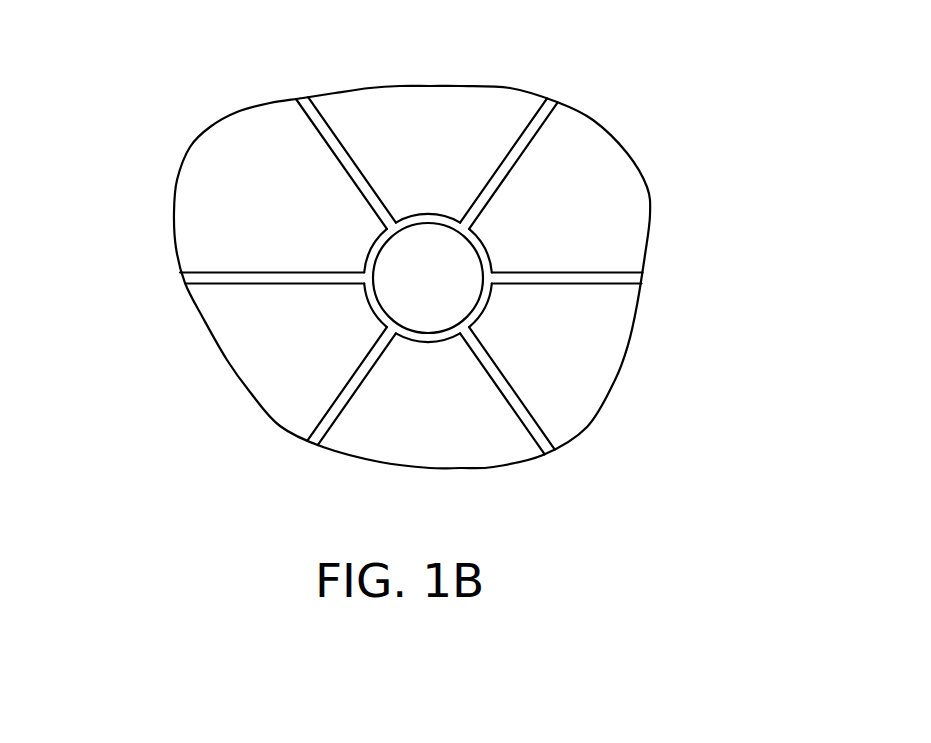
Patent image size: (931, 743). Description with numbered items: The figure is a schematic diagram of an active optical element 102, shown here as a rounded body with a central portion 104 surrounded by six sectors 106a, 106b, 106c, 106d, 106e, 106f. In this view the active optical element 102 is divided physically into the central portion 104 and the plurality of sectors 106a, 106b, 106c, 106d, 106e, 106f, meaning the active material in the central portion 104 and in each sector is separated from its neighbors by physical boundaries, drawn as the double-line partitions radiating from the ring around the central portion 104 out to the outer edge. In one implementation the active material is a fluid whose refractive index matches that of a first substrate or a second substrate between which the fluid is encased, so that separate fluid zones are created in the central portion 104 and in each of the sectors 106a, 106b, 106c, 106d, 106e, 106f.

The active optical element 102 is at (737, 117).
The central portion 104 is at (408, 275).
The sector 106a is at (238, 162).
The sector 106b is at (385, 117).
The sector 106c is at (580, 140).
The sector 106d is at (617, 344).
The sector 106e is at (487, 448).
The sector 106f is at (278, 403).